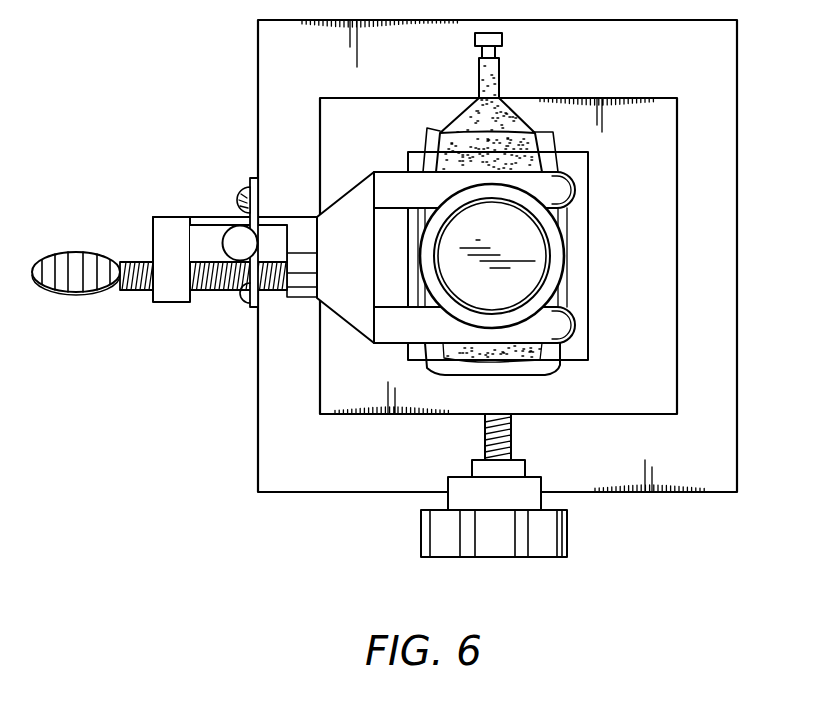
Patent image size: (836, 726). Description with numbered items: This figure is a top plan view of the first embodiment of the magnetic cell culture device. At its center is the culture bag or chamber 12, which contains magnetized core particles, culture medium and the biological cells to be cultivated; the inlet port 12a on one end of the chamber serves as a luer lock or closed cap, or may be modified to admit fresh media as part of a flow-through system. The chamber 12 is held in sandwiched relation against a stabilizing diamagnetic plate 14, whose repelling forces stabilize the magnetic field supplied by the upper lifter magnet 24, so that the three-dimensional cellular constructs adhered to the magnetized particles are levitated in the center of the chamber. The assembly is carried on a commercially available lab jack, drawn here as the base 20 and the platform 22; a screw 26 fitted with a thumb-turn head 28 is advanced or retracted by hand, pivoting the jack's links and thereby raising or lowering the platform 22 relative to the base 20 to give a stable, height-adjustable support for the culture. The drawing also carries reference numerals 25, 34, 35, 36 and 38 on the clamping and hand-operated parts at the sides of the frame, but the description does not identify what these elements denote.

The culture bag or chamber 12 is at (457, 121).
The inlet port 12a is at (502, 38).
The stabilizing diamagnetic plate 14 is at (584, 236).
The base 20 is at (643, 181).
The platform 22 is at (673, 75).
The upper lifter magnet 24 is at (522, 250).
The clamp pads 25 is at (575, 325).
The screw 26 is at (484, 435).
The thumb-turn head 28 is at (421, 528).
The ball 34 is at (238, 240).
The plate 35 is at (240, 198).
The threaded rod 36 is at (135, 292).
The handle 38 is at (80, 251).